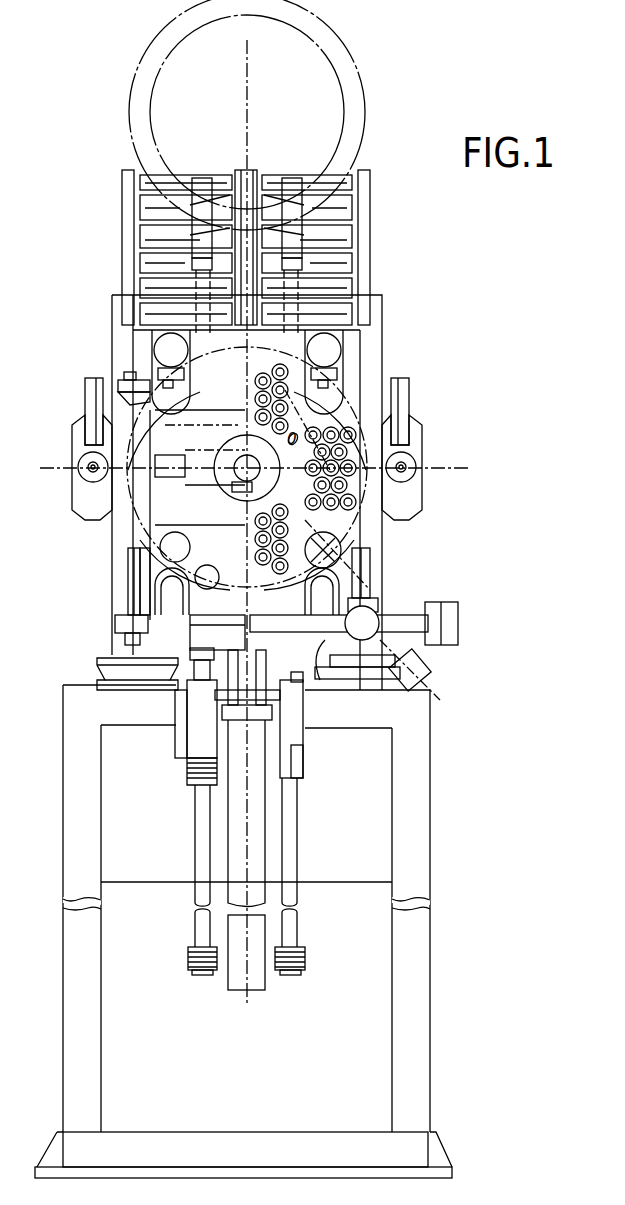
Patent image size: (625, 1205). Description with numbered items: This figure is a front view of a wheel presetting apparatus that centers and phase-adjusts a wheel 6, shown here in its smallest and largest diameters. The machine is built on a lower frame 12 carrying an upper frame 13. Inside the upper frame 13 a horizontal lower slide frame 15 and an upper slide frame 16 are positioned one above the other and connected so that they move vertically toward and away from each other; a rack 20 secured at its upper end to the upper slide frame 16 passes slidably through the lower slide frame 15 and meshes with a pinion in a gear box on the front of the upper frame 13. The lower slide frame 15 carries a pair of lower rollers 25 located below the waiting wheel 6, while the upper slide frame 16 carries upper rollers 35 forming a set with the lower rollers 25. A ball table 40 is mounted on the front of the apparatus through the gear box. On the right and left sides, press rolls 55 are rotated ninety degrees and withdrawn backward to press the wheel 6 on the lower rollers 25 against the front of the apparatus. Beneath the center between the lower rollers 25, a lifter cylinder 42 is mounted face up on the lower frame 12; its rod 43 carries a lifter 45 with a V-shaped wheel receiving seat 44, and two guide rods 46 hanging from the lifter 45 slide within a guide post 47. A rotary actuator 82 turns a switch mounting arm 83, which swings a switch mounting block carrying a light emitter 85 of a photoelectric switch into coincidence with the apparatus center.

The wheel 6 is at (142, 80).
The lifter 45 is at (135, 200).
The upper frame 13 is at (394, 355).
The upper roller 35 is at (125, 338).
The upper slide frame 16 is at (120, 382).
The press roll 55 is at (84, 384).
The ball table 40 is at (335, 517).
The lower roller 25 is at (128, 572).
The rack 20 is at (128, 590).
The light emitter 85 is at (130, 610).
The lower slide frame 15 is at (112, 625).
The rotary actuator 82 is at (383, 598).
The switch mounting arm 83 is at (333, 680).
The lower frame 12 is at (440, 795).
The rod 43 is at (203, 722).
The V-shaped wheel receiving seat 44 is at (175, 720).
The guide post 47 is at (190, 758).
The guide rod 46 is at (193, 893).
The lifter cylinder 42 is at (227, 983).